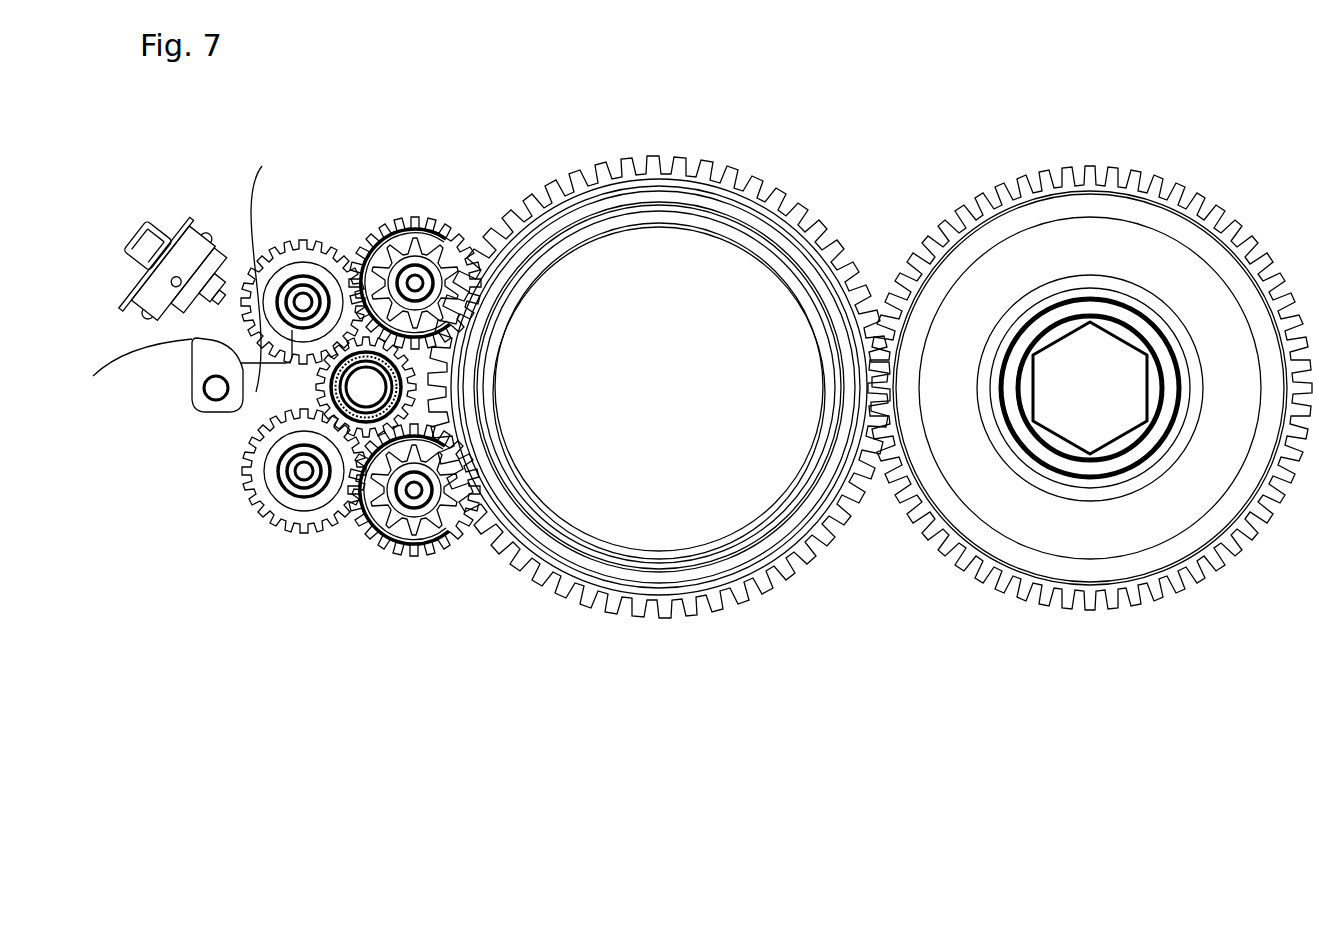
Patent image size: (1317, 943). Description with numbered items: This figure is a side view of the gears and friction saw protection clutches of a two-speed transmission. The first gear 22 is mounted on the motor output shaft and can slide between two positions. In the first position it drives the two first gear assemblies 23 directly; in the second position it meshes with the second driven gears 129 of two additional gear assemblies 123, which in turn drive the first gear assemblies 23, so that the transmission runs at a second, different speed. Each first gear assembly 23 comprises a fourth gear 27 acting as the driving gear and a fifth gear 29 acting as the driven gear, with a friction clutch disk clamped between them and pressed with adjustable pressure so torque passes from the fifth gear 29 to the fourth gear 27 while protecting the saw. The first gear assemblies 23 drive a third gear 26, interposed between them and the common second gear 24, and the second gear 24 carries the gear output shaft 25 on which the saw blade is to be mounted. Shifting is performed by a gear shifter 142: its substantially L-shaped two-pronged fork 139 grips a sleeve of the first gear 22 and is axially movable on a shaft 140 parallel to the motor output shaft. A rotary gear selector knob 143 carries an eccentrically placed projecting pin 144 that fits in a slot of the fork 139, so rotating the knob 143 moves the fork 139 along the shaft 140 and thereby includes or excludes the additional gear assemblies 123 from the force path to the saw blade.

The first gear 22 is at (318, 378).
The first gear assembly 23 is at (388, 213).
The second gear 24 is at (1114, 188).
The gear output shaft 25 is at (1095, 386).
The third gear 26 is at (760, 192).
The fourth gear 27 is at (453, 235).
The fifth gear 29 is at (426, 228).
The additional gear assembly 123 is at (263, 251).
The second driven gear 129 is at (308, 242).
The fork 139 is at (271, 265).
The shaft 140 is at (196, 400).
The gear shifter 142 is at (192, 377).
The rotary gear selector knob 143 is at (151, 233).
The projecting pin 144 is at (124, 371).